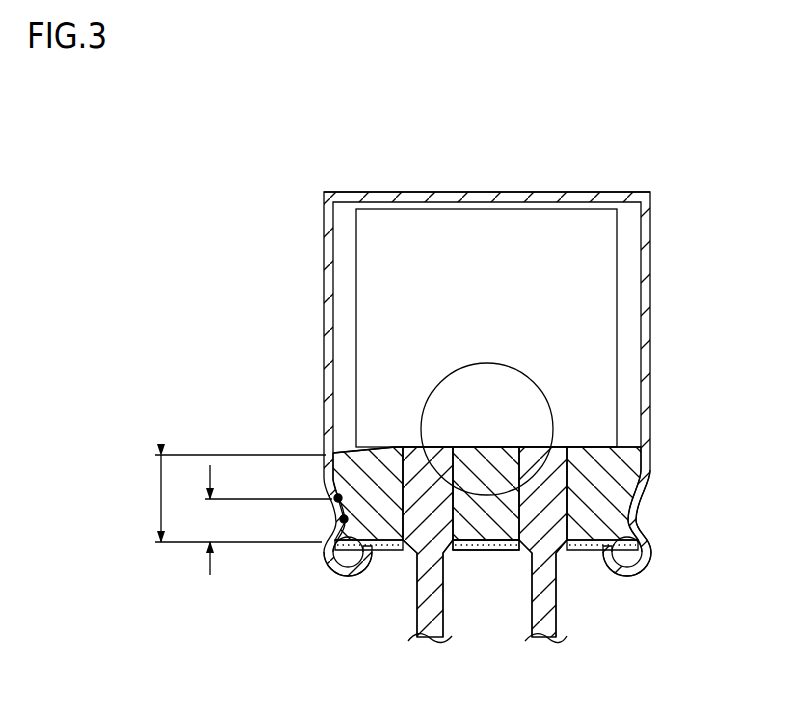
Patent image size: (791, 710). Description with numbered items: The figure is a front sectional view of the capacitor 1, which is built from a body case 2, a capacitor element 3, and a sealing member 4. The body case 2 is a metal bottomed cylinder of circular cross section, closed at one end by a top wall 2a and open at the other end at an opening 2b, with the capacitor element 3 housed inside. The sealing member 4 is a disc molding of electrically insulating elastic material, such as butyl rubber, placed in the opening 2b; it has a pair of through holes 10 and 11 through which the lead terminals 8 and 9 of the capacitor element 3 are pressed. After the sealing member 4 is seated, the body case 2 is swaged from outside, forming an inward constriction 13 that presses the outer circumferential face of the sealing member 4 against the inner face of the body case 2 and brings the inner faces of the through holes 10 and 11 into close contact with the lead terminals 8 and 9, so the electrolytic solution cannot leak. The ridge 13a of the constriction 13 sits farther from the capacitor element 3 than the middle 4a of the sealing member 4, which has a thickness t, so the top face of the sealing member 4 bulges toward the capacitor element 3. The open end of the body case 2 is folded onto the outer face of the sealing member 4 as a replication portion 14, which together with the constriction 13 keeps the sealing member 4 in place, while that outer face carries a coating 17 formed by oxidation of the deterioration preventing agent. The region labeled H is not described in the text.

The capacitor 1 is at (613, 167).
The body case 2 is at (648, 262).
The top wall 2a is at (360, 193).
The opening 2b is at (478, 557).
The capacitor element 3 is at (605, 367).
The sealing member 4 is at (460, 526).
The middle of the sealing member 4a is at (338, 497).
The lead terminal 8 is at (427, 588).
The lead terminal 9 is at (550, 595).
The through hole 10 is at (380, 547).
The through hole 11 is at (570, 527).
The constriction 13 is at (645, 518).
The ridge of the constriction 13a is at (330, 548).
The replication portion 14 is at (642, 573).
The coating 17 is at (490, 550).
The hole H is at (533, 385).
The thickness of the sealing member t is at (231, 515).